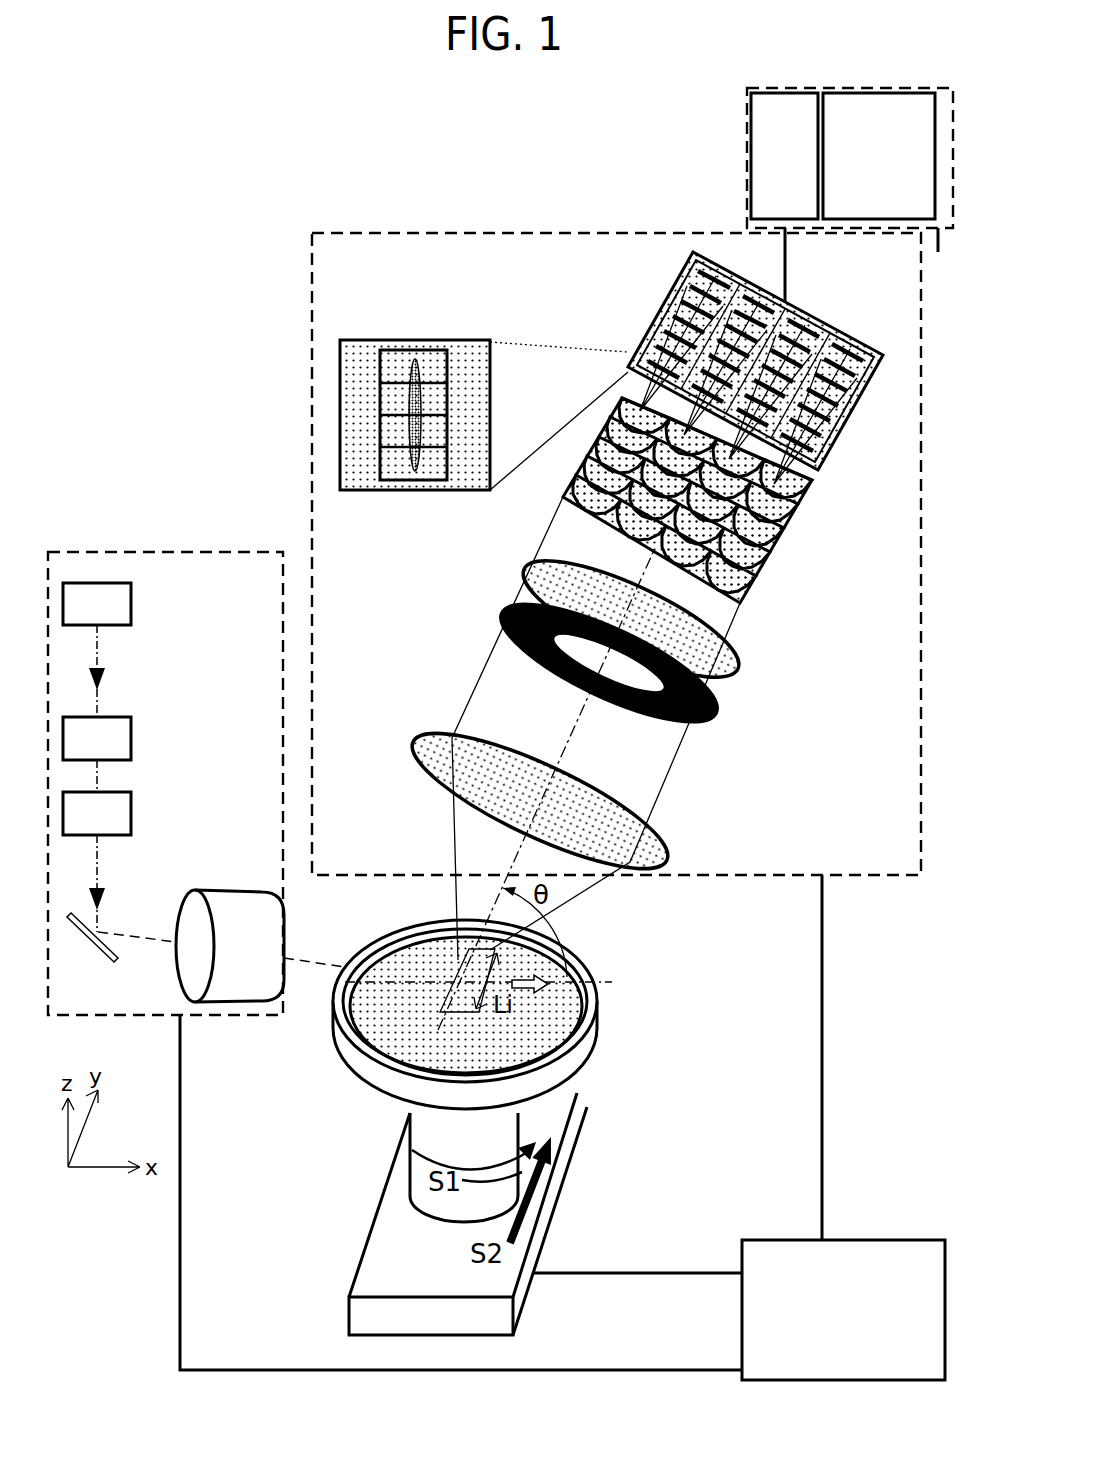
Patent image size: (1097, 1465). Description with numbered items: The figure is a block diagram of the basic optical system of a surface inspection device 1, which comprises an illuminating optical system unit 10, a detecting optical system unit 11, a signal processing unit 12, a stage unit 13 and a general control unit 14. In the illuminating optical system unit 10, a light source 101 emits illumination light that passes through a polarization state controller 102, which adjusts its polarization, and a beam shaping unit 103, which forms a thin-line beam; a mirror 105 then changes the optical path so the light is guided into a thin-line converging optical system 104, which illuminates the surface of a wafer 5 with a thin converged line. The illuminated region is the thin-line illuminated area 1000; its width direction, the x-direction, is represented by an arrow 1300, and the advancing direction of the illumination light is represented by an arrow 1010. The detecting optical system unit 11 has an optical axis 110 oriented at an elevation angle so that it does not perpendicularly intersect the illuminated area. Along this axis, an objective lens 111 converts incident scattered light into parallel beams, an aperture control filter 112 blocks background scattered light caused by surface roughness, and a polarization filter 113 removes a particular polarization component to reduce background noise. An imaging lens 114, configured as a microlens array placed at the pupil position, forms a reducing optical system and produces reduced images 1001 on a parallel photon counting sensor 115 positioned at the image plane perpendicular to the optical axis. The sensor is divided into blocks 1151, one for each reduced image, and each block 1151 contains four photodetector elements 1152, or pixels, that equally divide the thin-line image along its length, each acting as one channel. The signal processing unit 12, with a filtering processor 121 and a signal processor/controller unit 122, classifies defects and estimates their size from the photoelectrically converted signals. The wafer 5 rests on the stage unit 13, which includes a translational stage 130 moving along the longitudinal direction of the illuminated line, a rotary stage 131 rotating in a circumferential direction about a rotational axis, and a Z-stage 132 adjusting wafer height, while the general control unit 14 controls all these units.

The surface inspection device 1 is at (115, 165).
The illuminating optical system unit 10 is at (137, 550).
The light source 101 is at (97, 604).
The polarization state controller 102 is at (97, 738).
The beam shaping unit 103 is at (97, 813).
The thin-line converging optical system 104 is at (230, 946).
The mirror 105 is at (93, 946).
The detecting optical system unit 11 is at (381, 231).
The optical axis 110 is at (573, 743).
The objective lens 111 is at (667, 847).
The aperture control filter 112 is at (720, 706).
The polarization filter 113 is at (742, 660).
The imaging lens 114 is at (777, 540).
The parallel photon counting sensor 115 is at (835, 448).
The block 1151 is at (412, 492).
The photodetector element 1152 is at (397, 348).
The reduced image 1001 is at (422, 410).
The signal processing unit 12 is at (746, 110).
The filtering processor 121 is at (784, 156).
The signal processor/controller unit 122 is at (879, 156).
The stage unit 13 is at (563, 1157).
The translational stage 130 is at (377, 1268).
The rotary stage 131 is at (423, 1182).
The Z-stage 132 is at (427, 1137).
The arrow 1300 is at (527, 993).
The general control unit 14 is at (843, 1310).
The wafer 5 is at (378, 1043).
The thin-line illuminated area 1000 is at (447, 981).
The arrow 1010 is at (363, 963).